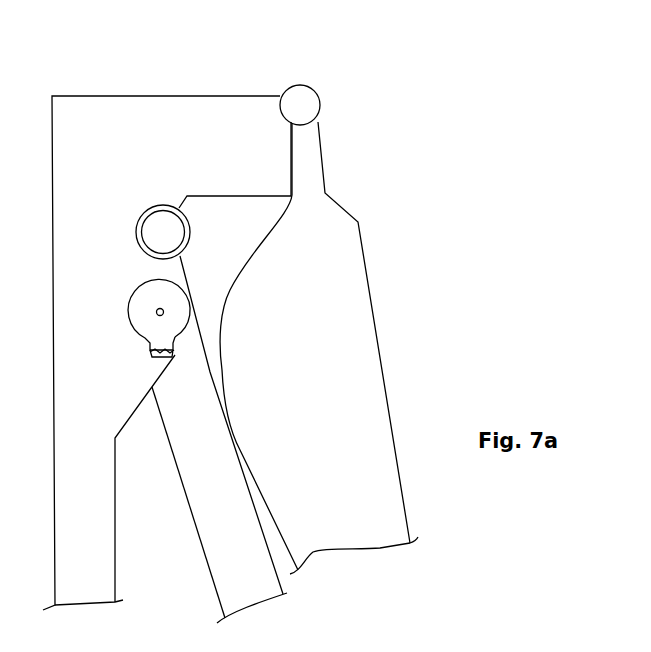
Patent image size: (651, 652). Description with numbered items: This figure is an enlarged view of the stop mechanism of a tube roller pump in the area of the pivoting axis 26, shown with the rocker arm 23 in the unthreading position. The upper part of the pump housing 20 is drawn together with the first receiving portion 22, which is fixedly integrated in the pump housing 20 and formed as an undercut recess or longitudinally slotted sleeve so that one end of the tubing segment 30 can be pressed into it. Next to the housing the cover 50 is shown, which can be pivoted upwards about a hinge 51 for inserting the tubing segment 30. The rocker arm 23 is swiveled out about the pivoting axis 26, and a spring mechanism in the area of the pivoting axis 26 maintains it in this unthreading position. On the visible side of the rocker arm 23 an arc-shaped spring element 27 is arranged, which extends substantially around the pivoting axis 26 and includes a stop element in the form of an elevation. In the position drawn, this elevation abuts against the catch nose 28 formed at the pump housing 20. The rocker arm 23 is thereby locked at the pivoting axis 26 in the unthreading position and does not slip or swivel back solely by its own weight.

The pump housing 20 is at (183, 110).
The first receiving portion 22 is at (143, 211).
The tubing segment 30 is at (190, 223).
The pivoting axis 26 is at (156, 312).
The arc-shaped spring element 27 is at (173, 318).
The catch nose 28 is at (172, 357).
The rocker arm 23 is at (222, 598).
The cover 50 is at (358, 337).
The hinge 51 is at (308, 100).